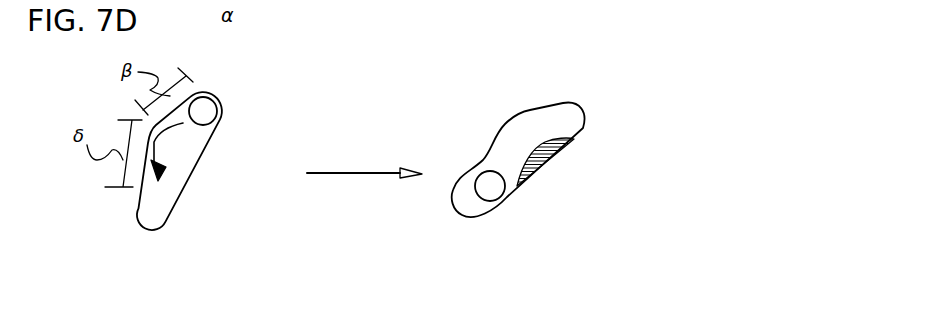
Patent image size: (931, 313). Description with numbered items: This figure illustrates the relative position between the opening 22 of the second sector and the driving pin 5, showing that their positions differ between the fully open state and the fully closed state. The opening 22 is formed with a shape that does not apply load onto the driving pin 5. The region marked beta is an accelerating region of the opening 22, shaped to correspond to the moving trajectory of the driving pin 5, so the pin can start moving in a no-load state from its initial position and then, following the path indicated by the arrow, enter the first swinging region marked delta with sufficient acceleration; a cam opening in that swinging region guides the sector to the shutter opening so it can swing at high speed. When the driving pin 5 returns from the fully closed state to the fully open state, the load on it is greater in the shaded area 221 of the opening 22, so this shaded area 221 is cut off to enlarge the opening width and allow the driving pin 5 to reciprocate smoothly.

The driving pin 5 is at (203, 107).
The opening of the second sector 22 is at (175, 188).
The shaded area 221 is at (558, 157).